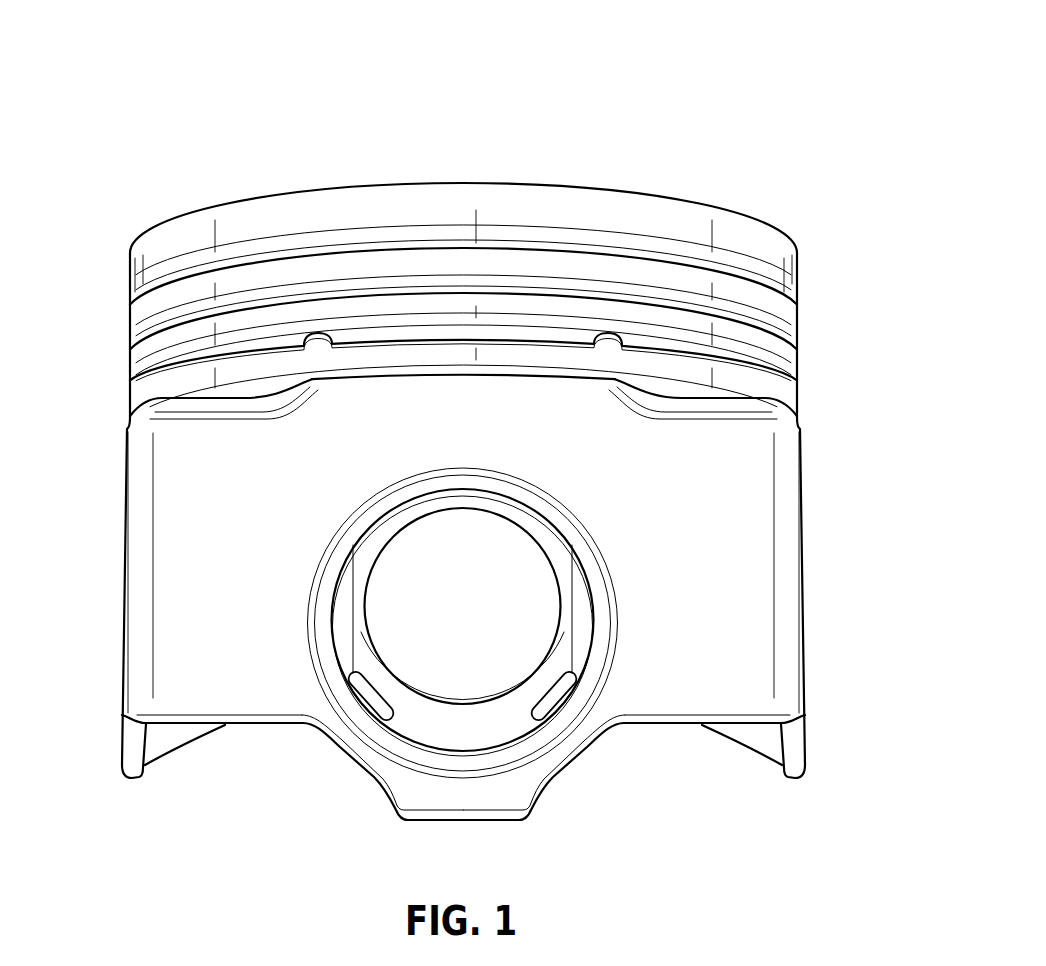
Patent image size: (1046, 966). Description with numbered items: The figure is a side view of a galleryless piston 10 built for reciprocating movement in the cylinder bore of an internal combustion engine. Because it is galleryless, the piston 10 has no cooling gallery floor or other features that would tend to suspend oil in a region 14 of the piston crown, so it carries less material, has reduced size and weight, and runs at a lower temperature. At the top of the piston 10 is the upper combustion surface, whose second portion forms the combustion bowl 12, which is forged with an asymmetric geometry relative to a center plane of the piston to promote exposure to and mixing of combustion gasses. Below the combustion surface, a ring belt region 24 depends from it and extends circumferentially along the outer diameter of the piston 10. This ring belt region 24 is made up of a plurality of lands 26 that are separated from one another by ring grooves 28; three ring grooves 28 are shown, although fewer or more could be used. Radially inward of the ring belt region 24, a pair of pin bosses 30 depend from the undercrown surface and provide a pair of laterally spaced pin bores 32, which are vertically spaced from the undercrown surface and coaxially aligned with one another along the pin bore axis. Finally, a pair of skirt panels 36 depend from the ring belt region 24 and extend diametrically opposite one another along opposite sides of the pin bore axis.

The galleryless piston 10 is at (773, 87).
The combustion bowl 12 is at (593, 177).
The region of the piston crown 14 is at (809, 233).
The ring belt region 24 is at (805, 255).
The lands 26 is at (137, 277).
The ring grooves 28 is at (140, 380).
The pin bosses 30 is at (550, 784).
The pin bores 32 is at (453, 606).
The skirt panels 36 is at (126, 578).